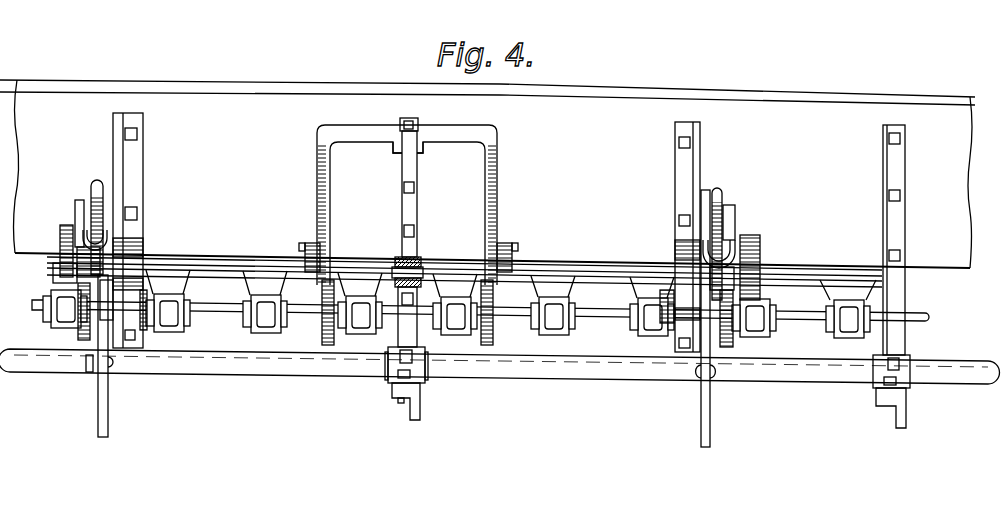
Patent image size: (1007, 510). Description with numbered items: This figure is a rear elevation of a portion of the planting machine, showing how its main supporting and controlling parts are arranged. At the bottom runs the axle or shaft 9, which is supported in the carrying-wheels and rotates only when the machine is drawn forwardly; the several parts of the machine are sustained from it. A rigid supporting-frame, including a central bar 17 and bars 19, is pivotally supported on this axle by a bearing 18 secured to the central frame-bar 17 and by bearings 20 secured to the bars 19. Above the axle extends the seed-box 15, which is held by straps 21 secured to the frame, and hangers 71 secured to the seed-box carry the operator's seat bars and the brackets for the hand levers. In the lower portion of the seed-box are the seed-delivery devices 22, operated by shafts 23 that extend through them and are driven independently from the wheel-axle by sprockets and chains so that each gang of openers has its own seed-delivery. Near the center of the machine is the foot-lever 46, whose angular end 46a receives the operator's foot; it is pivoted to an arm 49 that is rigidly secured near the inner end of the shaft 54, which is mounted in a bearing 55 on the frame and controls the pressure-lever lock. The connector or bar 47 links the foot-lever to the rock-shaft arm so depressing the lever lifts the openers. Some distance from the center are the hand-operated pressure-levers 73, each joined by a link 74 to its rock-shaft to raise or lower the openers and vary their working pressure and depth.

The axle or shaft 9 is at (537, 374).
The seed-box 15 is at (487, 174).
The central bar 17 is at (420, 390).
The bearing 18 is at (387, 373).
The bars 19 is at (907, 420).
The bearings 20 is at (873, 385).
The straps 21 is at (418, 200).
The seed-delivery devices 22 is at (172, 328).
The shafts 23 is at (795, 323).
The foot-lever 46 is at (326, 217).
The angular end 46a is at (372, 141).
The connector or bar 47 is at (327, 347).
The arm 49 is at (303, 254).
The shaft 54 is at (203, 265).
The bearing 55 is at (421, 257).
The hangers 71 is at (144, 226).
The pressure-levers 73 is at (96, 178).
The link 74 is at (106, 437).